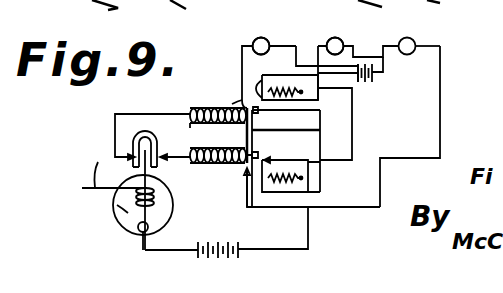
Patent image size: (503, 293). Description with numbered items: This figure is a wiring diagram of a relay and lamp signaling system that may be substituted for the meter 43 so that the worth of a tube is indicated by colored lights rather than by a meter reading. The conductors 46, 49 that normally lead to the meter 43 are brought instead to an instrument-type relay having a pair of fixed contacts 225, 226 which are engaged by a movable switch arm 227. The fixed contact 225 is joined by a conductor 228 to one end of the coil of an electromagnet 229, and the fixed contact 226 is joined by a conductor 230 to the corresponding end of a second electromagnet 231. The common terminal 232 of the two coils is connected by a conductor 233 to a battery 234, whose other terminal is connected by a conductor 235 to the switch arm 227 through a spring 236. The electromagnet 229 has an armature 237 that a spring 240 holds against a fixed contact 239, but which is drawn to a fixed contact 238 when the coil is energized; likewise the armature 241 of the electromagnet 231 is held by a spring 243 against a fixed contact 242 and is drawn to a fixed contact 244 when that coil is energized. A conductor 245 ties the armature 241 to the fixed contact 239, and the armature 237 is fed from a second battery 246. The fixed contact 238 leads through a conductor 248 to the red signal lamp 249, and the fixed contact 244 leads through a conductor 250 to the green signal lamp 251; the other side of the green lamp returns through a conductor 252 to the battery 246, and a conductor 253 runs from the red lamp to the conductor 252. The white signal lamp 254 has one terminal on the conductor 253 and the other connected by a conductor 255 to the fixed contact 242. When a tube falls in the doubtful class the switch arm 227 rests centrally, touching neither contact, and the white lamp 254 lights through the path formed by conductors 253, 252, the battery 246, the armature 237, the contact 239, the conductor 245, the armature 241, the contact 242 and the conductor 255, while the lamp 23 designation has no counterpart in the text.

The vacuum tube 23 is at (175, 198).
The meter 43 is at (155, 196).
The conductor 46 is at (116, 180).
The conductor 49 is at (117, 206).
The fixed contact 225 is at (133, 171).
The fixed contact 226 is at (177, 109).
The movable switch arm 227 is at (97, 167).
The conductor 228 is at (190, 110).
The electromagnet 229 is at (241, 82).
The conductor 230 is at (199, 134).
The electromagnet 231 is at (208, 163).
The common terminal 232 is at (267, 135).
The conductor 233 is at (282, 249).
The battery 234 is at (192, 243).
The conductor 235 is at (150, 226).
The spring 236 is at (130, 228).
The armature 237 is at (271, 115).
The fixed contact 238 is at (225, 95).
The fixed contact 239 is at (292, 95).
The spring 240 is at (287, 86).
The armature 241 is at (230, 207).
The fixed contact 242 is at (283, 172).
The spring 243 is at (285, 183).
The fixed contact 244 is at (246, 175).
The conductor 245 is at (322, 172).
The battery 246 is at (374, 80).
The conductor 248 is at (241, 60).
The red signal lamp 249 is at (268, 40).
The conductor 250 is at (318, 208).
The green signal lamp 251 is at (418, 41).
The conductor 252 is at (384, 72).
The conductor 253 is at (368, 62).
The white signal lamp 254 is at (353, 38).
The conductor 255 is at (357, 31).